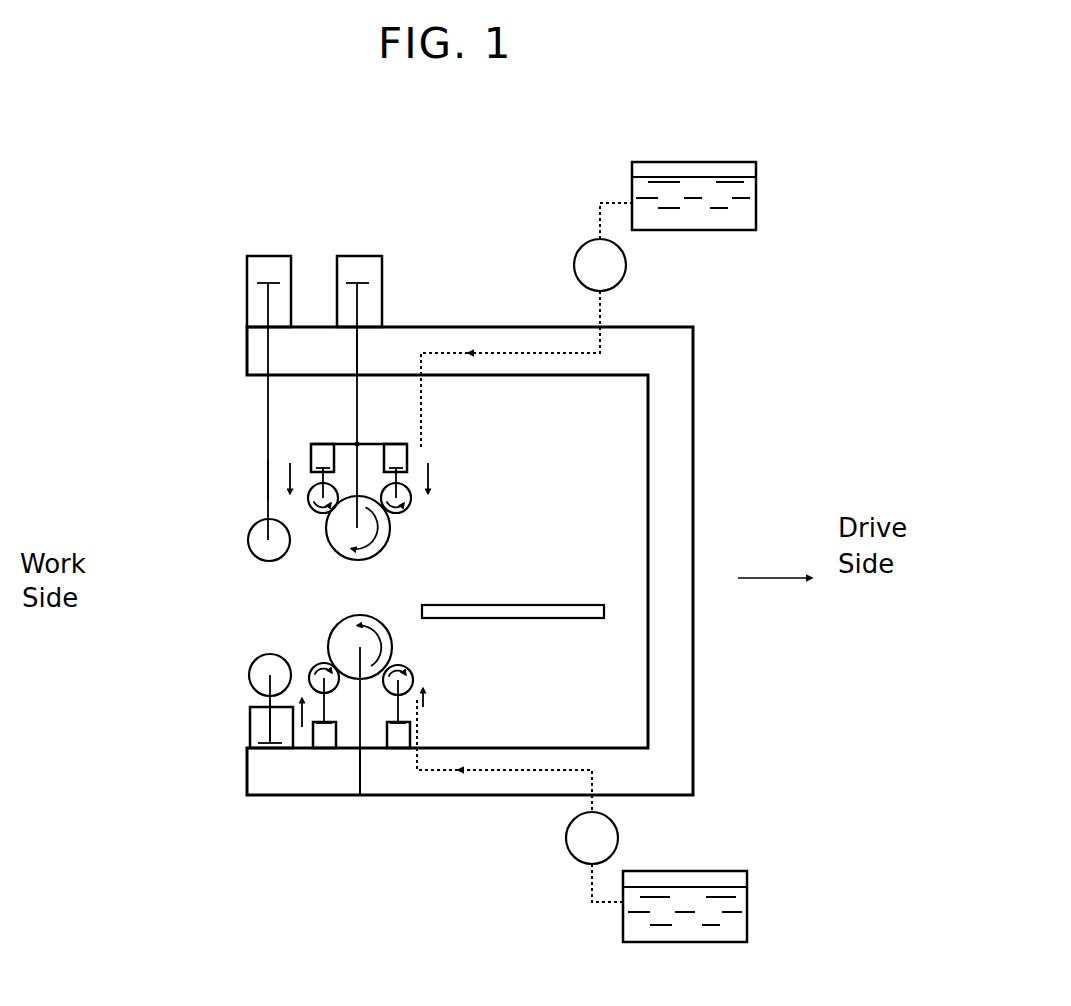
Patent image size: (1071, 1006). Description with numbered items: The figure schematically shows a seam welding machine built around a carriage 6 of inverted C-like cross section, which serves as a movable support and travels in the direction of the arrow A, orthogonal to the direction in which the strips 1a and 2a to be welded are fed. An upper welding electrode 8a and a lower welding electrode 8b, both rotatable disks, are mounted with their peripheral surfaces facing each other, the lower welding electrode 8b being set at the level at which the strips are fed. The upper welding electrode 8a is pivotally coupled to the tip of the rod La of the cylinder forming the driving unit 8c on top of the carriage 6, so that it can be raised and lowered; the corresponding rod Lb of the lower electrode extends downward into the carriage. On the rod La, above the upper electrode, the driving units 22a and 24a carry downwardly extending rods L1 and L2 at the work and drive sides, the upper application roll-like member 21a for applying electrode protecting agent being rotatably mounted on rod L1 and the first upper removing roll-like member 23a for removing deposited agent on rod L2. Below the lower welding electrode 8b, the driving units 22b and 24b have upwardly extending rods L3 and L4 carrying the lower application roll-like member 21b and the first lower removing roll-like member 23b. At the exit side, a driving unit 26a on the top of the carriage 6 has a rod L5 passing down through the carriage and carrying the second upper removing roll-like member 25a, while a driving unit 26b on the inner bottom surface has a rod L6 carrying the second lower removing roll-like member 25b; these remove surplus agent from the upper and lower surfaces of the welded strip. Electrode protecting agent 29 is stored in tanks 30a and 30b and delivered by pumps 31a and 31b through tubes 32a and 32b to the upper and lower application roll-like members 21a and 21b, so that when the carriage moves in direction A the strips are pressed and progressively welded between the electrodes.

The carriage 6 is at (693, 418).
The direction arrow A is at (760, 579).
The strip 1a is at (526, 582).
The strip 2a is at (536, 605).
The driving unit 26a is at (270, 256).
The driving unit 8c is at (358, 256).
The rod La is at (360, 352).
The driving unit 24a is at (320, 444).
The driving unit 22a is at (395, 444).
The first upper removing roll-like member 23a is at (311, 512).
The upper application roll-like member 21a is at (408, 510).
The upper welding electrode 8a is at (388, 548).
The second upper removing roll-like member 25a is at (248, 540).
The rod L2 is at (312, 465).
The rod L1 is at (407, 477).
The rod L5 is at (268, 458).
The lower welding electrode 8b is at (390, 640).
The first lower removing roll-like member 23b is at (313, 670).
The lower application roll-like member 21b is at (413, 678).
The second lower removing roll-like member 25b is at (249, 672).
The driving unit 24b is at (322, 743).
The driving unit 22b is at (397, 743).
The driving unit 26b is at (247, 732).
The rod L6 is at (250, 707).
The rod L4 is at (318, 700).
The rod L3 is at (400, 712).
The lower axis Lb is at (362, 748).
The tube 32a is at (505, 350).
The pump 31a is at (577, 250).
The tank 30a is at (690, 162).
The tube 32b is at (494, 773).
The pump 31b is at (570, 858).
The tank 30b is at (705, 870).
The electrode protecting agent 29 is at (726, 230).